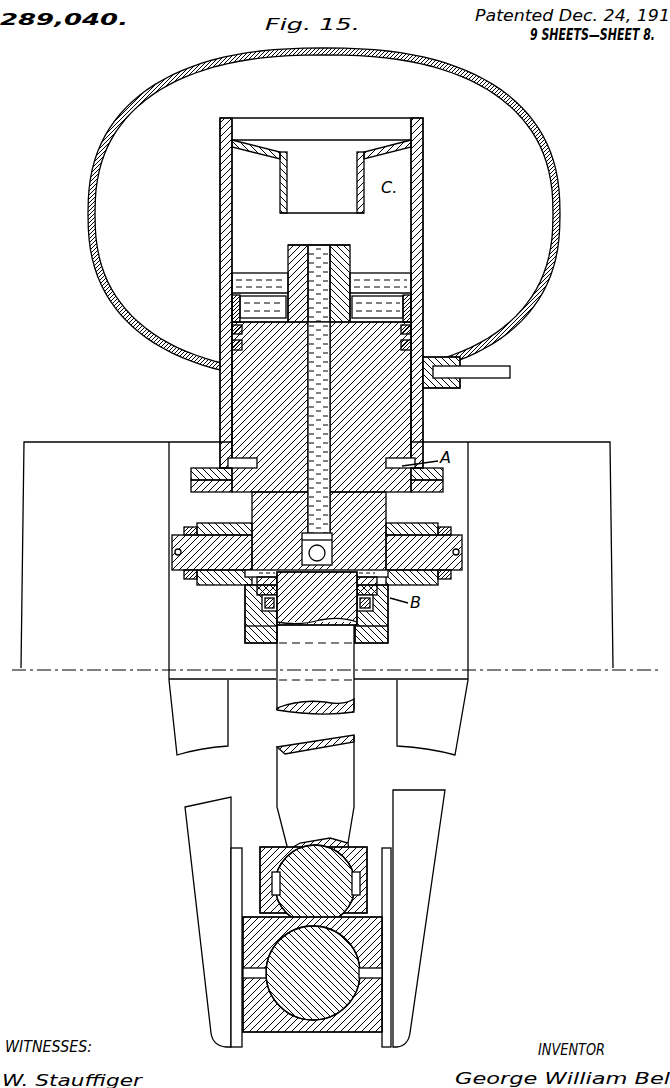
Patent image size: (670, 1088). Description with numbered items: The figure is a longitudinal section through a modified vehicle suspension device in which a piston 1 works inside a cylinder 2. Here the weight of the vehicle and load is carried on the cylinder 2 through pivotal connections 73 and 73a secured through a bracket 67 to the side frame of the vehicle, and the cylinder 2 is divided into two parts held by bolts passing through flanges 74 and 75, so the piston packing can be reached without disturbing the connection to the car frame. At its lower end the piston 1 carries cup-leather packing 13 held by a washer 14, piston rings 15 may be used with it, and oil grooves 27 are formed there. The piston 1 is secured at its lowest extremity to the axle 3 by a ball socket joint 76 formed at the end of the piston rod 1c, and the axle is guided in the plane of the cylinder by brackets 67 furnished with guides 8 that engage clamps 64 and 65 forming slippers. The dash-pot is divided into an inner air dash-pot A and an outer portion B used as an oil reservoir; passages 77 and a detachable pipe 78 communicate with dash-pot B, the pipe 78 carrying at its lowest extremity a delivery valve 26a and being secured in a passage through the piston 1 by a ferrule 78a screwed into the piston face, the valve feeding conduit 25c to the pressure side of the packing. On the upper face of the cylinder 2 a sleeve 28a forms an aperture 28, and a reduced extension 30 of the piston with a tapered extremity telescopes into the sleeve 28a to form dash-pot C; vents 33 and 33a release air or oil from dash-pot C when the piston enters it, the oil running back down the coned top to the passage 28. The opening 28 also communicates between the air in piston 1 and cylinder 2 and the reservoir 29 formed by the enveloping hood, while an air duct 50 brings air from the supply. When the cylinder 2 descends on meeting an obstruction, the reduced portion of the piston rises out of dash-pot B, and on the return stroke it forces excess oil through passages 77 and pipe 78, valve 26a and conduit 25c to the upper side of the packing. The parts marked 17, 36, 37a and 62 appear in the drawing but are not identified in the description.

The piston 1 is at (405, 417).
The piston rod 1c is at (349, 700).
The cylinder 2 is at (423, 213).
The axle 3 is at (312, 1020).
The guides 8 is at (390, 886).
The packing 13 is at (413, 304).
The washer 14 is at (232, 310).
The piston rings 15 is at (414, 349).
The casing wall 17 is at (420, 443).
The conduit 25c is at (300, 410).
The delivery valve 26a is at (306, 549).
The oil grooves 27 is at (414, 329).
The aperture 28 is at (322, 202).
The sleeve 28a is at (287, 182).
The reservoir 29 is at (325, 225).
The reduced extension 30 is at (358, 279).
The vents 33 is at (291, 257).
The vents 33a is at (259, 150).
The upper space 36 is at (313, 95).
The elliptical shell 37a is at (528, 151).
The air duct 50 is at (492, 369).
The plate 62 is at (317, 555).
The clamp 64 is at (375, 956).
The clamp 65 is at (375, 1003).
The bracket 67 is at (190, 950).
The pivotal connection 73 is at (173, 552).
The pivotal connection 73a is at (430, 524).
The flange 74 is at (445, 477).
The flange 75 is at (446, 489).
The ball socket joint 76 is at (348, 851).
The passages 77 is at (268, 605).
The detachable pipe 78 is at (300, 386).
The ferrule 78a is at (338, 256).